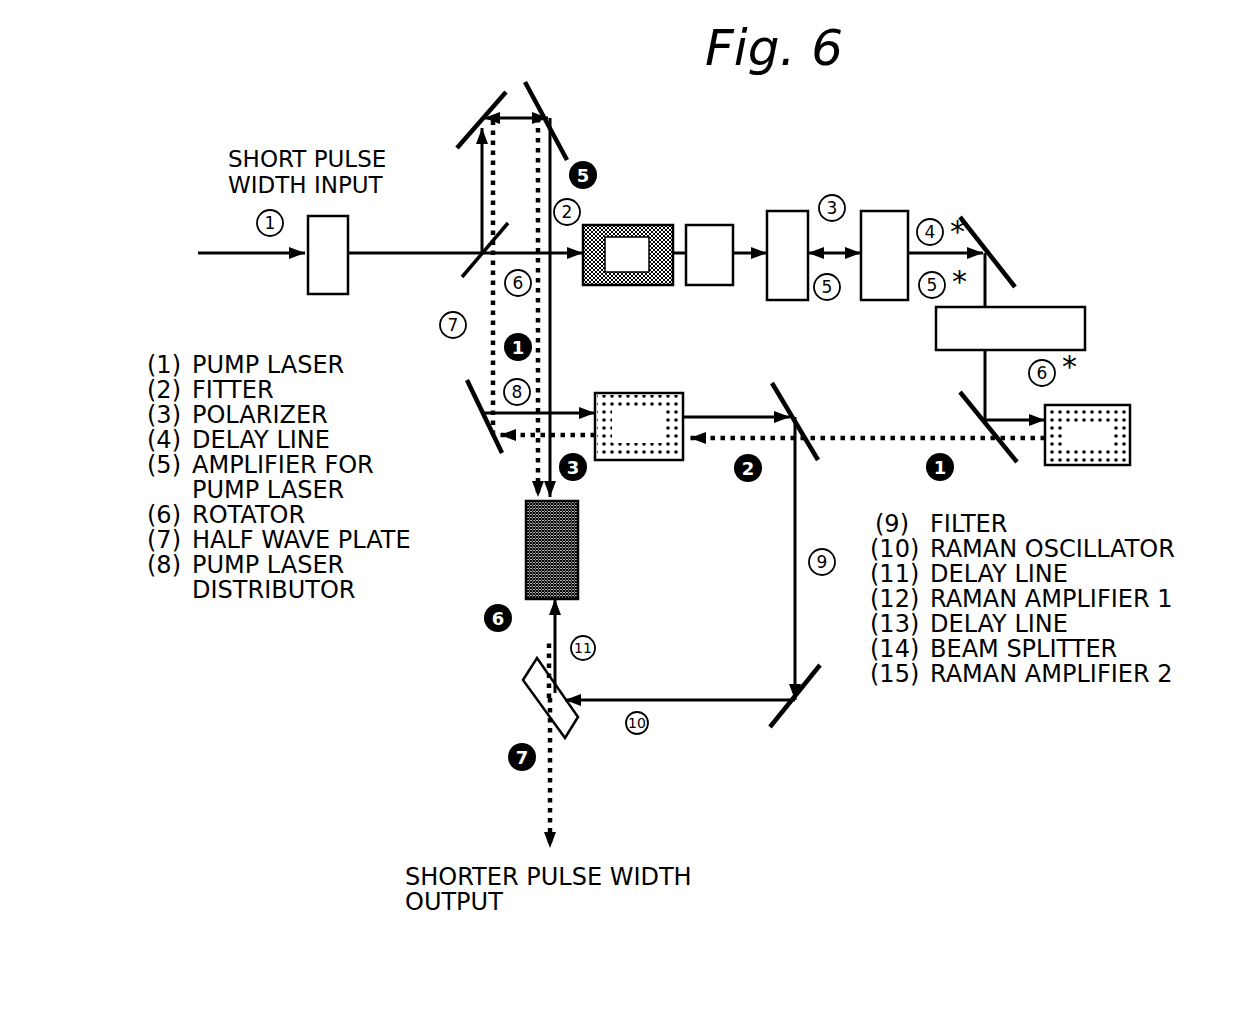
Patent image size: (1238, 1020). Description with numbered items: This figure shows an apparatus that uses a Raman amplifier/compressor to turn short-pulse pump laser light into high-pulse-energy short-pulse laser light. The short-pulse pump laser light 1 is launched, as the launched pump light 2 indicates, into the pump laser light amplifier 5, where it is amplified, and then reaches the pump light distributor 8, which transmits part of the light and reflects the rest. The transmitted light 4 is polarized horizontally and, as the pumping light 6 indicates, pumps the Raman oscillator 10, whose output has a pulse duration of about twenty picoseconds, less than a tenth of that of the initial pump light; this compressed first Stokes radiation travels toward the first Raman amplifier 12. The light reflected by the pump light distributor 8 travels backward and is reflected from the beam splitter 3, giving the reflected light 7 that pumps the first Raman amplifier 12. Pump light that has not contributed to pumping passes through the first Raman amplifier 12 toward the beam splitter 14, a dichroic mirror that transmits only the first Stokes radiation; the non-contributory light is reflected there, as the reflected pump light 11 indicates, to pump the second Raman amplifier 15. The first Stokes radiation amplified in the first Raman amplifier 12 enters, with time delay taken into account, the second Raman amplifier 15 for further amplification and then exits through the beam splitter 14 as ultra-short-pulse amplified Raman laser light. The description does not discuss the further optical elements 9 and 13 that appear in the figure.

The short-pulse pump laser light 1 is at (251, 275).
The launched pump laser light 2 is at (328, 255).
The beam splitter 3 is at (455, 242).
The transmitted light 4 is at (518, 155).
The pump laser light amplifier 5 is at (628, 255).
The light pumping the Raman oscillator 6 is at (709, 255).
The light reflected from the beam splitter 7 is at (787, 255).
The pump light distributor 8 is at (884, 255).
The filter 9 is at (1010, 328).
The Raman oscillator 10 is at (1087, 435).
The light reflected by the dichroic beam splitter 11 is at (582, 307).
The first Raman amplifier 12 is at (639, 426).
The delay line 13 is at (801, 719).
The beam splitter (dichroic mirror) 14 is at (516, 698).
The second Raman amplifier 15 is at (516, 550).